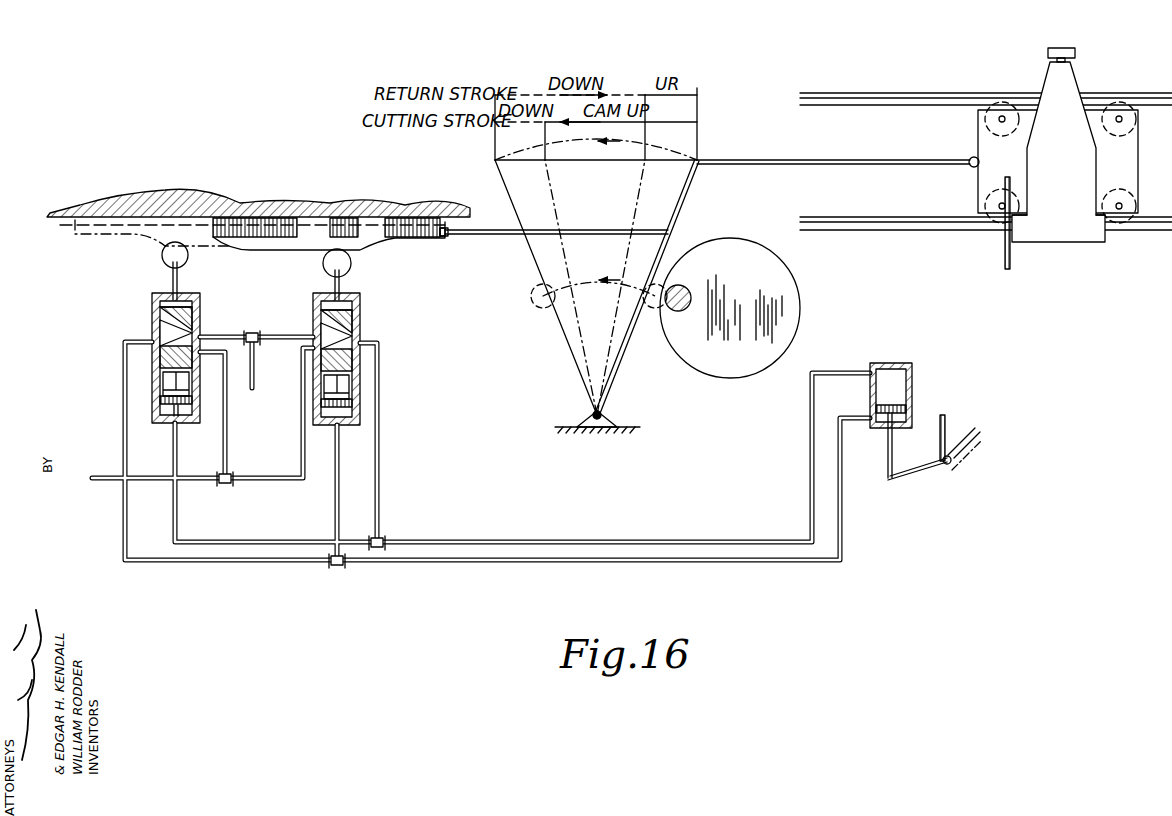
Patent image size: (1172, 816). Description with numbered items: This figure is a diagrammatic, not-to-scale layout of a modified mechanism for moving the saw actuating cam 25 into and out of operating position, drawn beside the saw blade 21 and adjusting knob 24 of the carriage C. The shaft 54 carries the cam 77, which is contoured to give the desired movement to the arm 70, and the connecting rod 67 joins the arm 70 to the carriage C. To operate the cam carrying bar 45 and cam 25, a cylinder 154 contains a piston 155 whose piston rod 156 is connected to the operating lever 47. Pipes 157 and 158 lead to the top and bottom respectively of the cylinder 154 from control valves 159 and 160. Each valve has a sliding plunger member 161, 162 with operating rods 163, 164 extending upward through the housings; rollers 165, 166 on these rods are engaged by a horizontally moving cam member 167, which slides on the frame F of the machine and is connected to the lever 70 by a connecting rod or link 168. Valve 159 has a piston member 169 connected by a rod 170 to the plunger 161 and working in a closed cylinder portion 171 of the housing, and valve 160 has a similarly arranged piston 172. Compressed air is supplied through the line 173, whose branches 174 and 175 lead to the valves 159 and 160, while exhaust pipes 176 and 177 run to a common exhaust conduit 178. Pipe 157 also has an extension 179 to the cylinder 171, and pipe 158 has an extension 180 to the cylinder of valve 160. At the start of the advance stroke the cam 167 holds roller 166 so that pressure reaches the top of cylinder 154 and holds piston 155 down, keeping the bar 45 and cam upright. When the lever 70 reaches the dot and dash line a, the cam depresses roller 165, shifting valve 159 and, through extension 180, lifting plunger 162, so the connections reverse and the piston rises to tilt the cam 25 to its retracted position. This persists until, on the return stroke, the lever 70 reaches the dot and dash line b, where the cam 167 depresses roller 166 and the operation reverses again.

The saw blade 21 is at (1012, 258).
The adjusting knob 24 is at (1078, 50).
The saw actuating cam 25 is at (946, 414).
The cam carrying bar 45 is at (982, 435).
The operating lever 47 is at (922, 474).
The shaft 54 is at (670, 312).
The connecting rod 67 is at (840, 165).
The arm 70 is at (668, 178).
The cam 77 is at (795, 275).
The cylinder 154 is at (914, 368).
The piston 155 is at (892, 404).
The piston rod 156 is at (885, 460).
The pipe 157 is at (382, 460).
The pipe 158 is at (180, 558).
The control valve 159 is at (152, 312).
The control valve 160 is at (362, 308).
The sliding plunger member 161 is at (195, 312).
The sliding plunger member 162 is at (362, 322).
The operating rod 163 is at (185, 272).
The operating rod 164 is at (345, 285).
The roller 165 is at (162, 256).
The roller 166 is at (352, 268).
The cam member 167 is at (150, 208).
The connecting rod 168 is at (498, 236).
The piston member 169 is at (185, 406).
The rod 170 is at (160, 370).
The closed cylinder portion 171 is at (180, 425).
The piston 172 is at (362, 400).
The line 173 is at (190, 482).
The branch 174 is at (228, 440).
The branch 175 is at (300, 440).
The exhaust pipe 176 is at (228, 340).
The exhaust pipe 177 is at (288, 328).
The common exhaust conduit 178 is at (254, 365).
The extension 179 is at (270, 522).
The extension 180 is at (336, 492).
The carriage C is at (995, 145).
The frame F is at (258, 211).
The dot and dash line a is at (552, 200).
The dot and dash line b is at (640, 182).